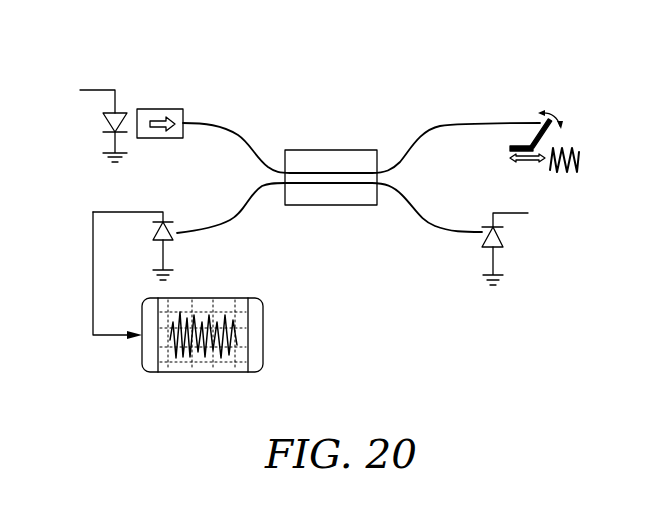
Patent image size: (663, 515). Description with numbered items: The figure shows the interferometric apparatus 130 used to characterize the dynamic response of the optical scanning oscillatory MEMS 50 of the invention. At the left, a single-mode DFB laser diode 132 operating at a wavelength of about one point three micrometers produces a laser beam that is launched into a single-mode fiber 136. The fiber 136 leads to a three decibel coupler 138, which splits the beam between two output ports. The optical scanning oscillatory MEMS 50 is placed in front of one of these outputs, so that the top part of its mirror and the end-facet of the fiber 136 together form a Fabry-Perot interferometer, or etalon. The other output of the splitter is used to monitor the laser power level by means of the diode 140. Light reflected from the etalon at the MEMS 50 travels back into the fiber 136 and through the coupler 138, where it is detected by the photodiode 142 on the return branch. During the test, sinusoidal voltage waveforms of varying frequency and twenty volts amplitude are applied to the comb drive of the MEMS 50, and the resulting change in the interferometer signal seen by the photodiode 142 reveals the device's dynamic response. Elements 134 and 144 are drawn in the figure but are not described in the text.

The interferometric apparatus 130 is at (325, 57).
The DFB laser diode 132 is at (103, 116).
The optical isolator 134 is at (158, 109).
The single-mode fiber 136 is at (231, 123).
The 3 dB coupler 138 is at (343, 160).
The diode 140 is at (503, 240).
The photodiode 142 is at (173, 238).
The oscilloscope display 144 is at (263, 322).
The optical scanning oscillatory MEMS 50 is at (543, 139).